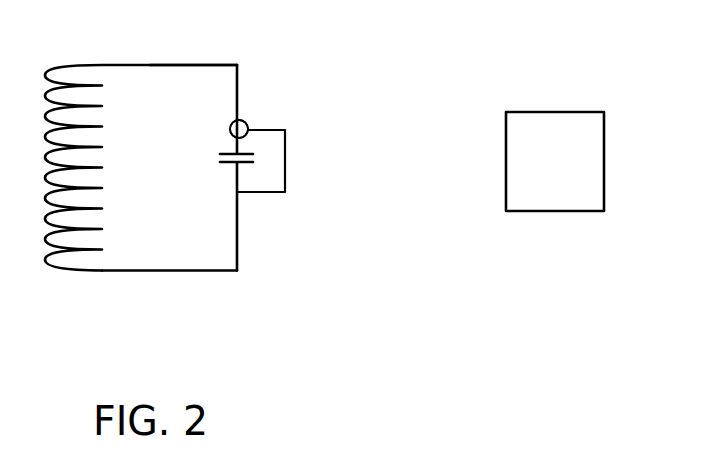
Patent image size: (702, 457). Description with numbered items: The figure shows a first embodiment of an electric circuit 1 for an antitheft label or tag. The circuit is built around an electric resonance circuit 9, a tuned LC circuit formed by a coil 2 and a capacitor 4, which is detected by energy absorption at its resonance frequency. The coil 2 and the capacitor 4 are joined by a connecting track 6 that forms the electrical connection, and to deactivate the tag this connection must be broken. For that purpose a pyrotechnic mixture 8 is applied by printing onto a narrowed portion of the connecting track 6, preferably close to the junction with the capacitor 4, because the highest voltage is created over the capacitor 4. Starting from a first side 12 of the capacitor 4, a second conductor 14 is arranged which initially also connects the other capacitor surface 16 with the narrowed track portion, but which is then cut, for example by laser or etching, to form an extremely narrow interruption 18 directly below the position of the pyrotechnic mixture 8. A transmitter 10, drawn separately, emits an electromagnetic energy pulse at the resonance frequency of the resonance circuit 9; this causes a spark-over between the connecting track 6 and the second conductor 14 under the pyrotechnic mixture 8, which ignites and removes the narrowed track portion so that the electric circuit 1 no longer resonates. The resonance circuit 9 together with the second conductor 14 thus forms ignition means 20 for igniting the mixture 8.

The electric circuit 1 is at (331, 314).
The coil 2 is at (102, 213).
The capacitor 4 is at (222, 170).
The connecting track 6 is at (237, 78).
The pyrotechnic mixture 8 is at (232, 122).
The electric resonance circuit 9 is at (125, 255).
The transmitter 10 is at (553, 137).
The first side of the capacitor 12 is at (238, 161).
The second conductor 14 is at (285, 192).
The other capacitor surface 16 is at (253, 152).
The interruption 18 is at (245, 121).
The ignition means 20 is at (193, 258).